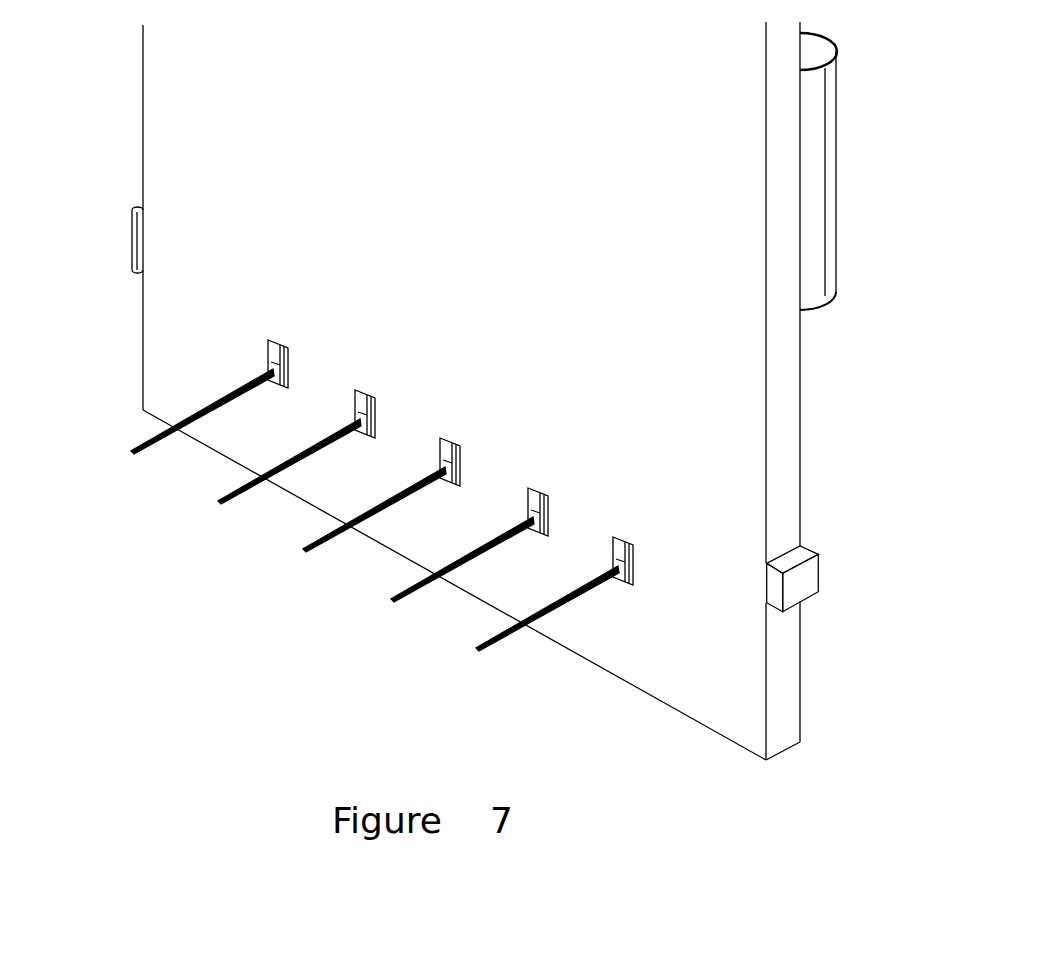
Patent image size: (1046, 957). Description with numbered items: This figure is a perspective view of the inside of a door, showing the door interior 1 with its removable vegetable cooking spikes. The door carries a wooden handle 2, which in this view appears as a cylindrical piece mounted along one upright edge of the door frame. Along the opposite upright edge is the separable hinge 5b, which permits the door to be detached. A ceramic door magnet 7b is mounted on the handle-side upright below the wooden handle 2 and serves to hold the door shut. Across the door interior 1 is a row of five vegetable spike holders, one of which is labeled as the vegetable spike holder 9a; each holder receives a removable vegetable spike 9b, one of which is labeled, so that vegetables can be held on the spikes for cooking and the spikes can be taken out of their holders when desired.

The door interior 1 is at (710, 637).
The wooden handle 2 is at (810, 296).
The separable hinge 5b is at (131, 269).
The ceramic door magnet 7b is at (812, 577).
The vegetable spike holder 9a is at (268, 350).
The removable vegetable spike 9b is at (225, 497).